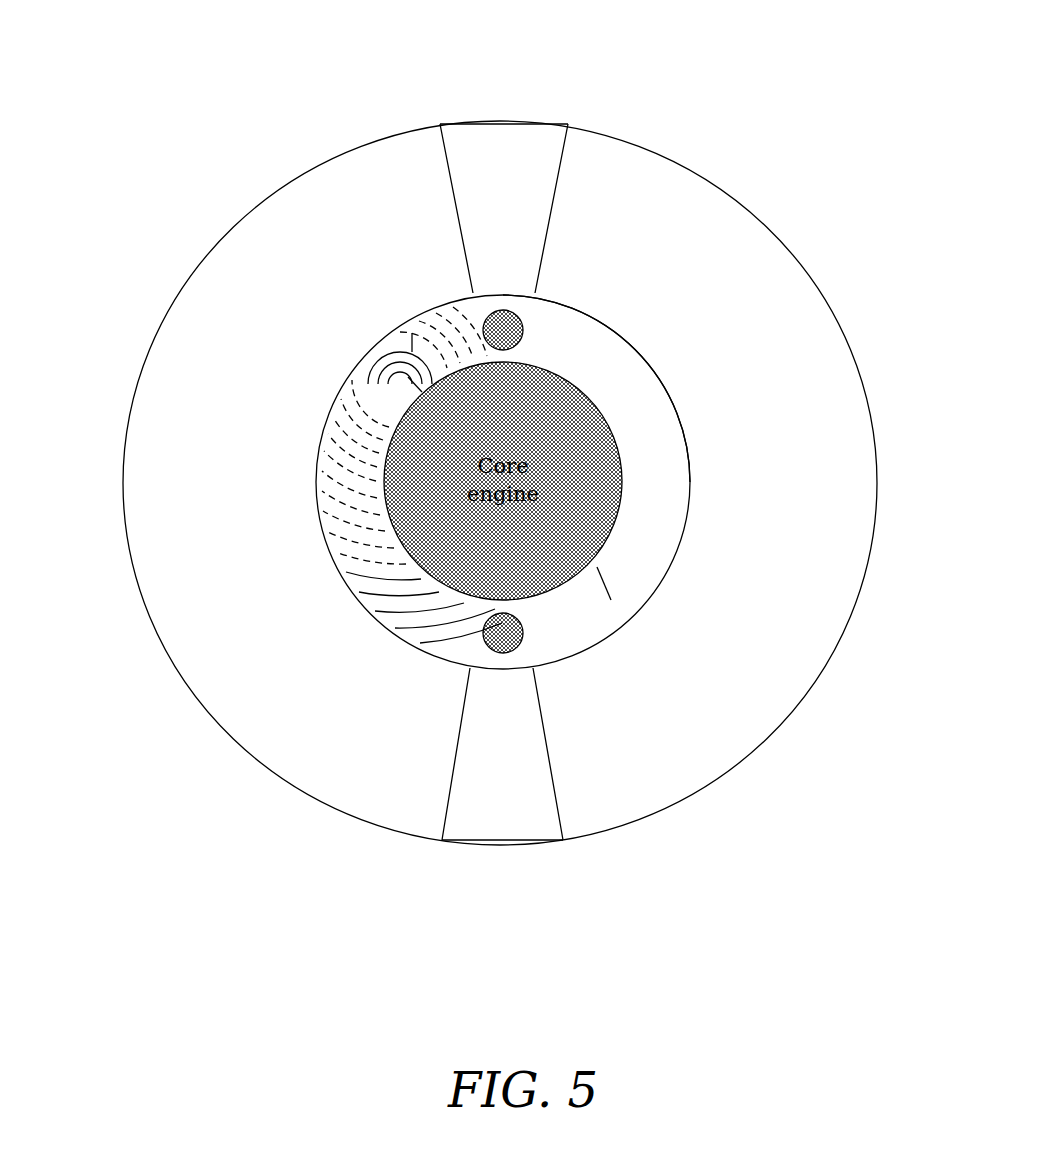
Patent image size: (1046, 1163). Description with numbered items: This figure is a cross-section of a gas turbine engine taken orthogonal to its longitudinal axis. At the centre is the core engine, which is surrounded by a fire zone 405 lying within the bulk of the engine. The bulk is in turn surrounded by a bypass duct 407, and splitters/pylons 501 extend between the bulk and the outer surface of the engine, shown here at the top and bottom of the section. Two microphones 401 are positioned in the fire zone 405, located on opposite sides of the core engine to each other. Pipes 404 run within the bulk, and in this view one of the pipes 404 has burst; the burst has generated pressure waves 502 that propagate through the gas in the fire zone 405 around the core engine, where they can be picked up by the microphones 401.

The splitters/pylons 501 is at (497, 158).
The microphones 401 is at (532, 317).
The fire zone 405 is at (621, 407).
The bypass duct 407 is at (727, 450).
The pipes 404 is at (615, 572).
The pressure waves 502 is at (352, 400).